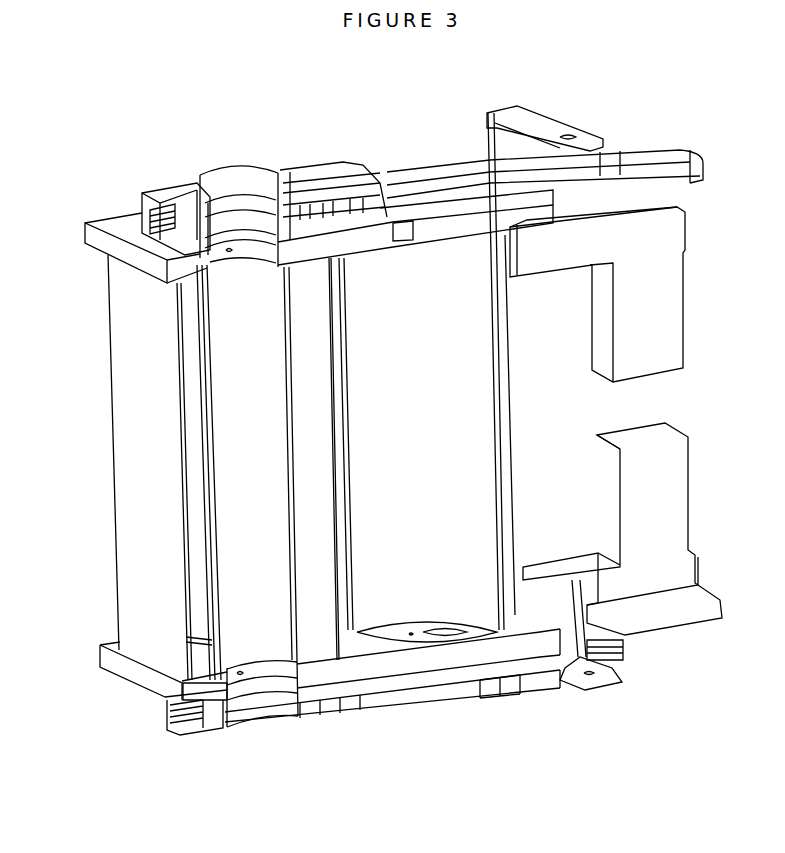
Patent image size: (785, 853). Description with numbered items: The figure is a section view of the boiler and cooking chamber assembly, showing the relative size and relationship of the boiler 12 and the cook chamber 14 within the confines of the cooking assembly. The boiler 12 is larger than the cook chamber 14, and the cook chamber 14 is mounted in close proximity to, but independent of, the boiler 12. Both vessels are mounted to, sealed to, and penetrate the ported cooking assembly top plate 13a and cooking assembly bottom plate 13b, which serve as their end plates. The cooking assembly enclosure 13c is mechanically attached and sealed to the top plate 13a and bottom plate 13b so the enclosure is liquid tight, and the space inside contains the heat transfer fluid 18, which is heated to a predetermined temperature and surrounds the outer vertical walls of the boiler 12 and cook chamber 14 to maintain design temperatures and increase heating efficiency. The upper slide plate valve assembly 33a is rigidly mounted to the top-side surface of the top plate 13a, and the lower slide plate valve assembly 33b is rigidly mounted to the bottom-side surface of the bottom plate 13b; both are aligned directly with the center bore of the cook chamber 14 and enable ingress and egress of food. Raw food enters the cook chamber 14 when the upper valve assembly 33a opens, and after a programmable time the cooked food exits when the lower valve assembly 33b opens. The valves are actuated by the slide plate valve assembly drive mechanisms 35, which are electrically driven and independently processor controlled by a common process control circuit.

The boiler 12 is at (427, 377).
The cooking assembly top plate 13a is at (297, 233).
The cooking assembly bottom plate 13b is at (308, 682).
The cooking assembly enclosure 13c is at (95, 452).
The cook chamber 14 is at (247, 446).
The heat transfer fluid 18 is at (258, 469).
The upper slide plate valve assembly 33a is at (491, 173).
The lower slide plate valve assembly 33b is at (424, 693).
The slide plate valve assembly drive mechanisms 35 is at (616, 448).